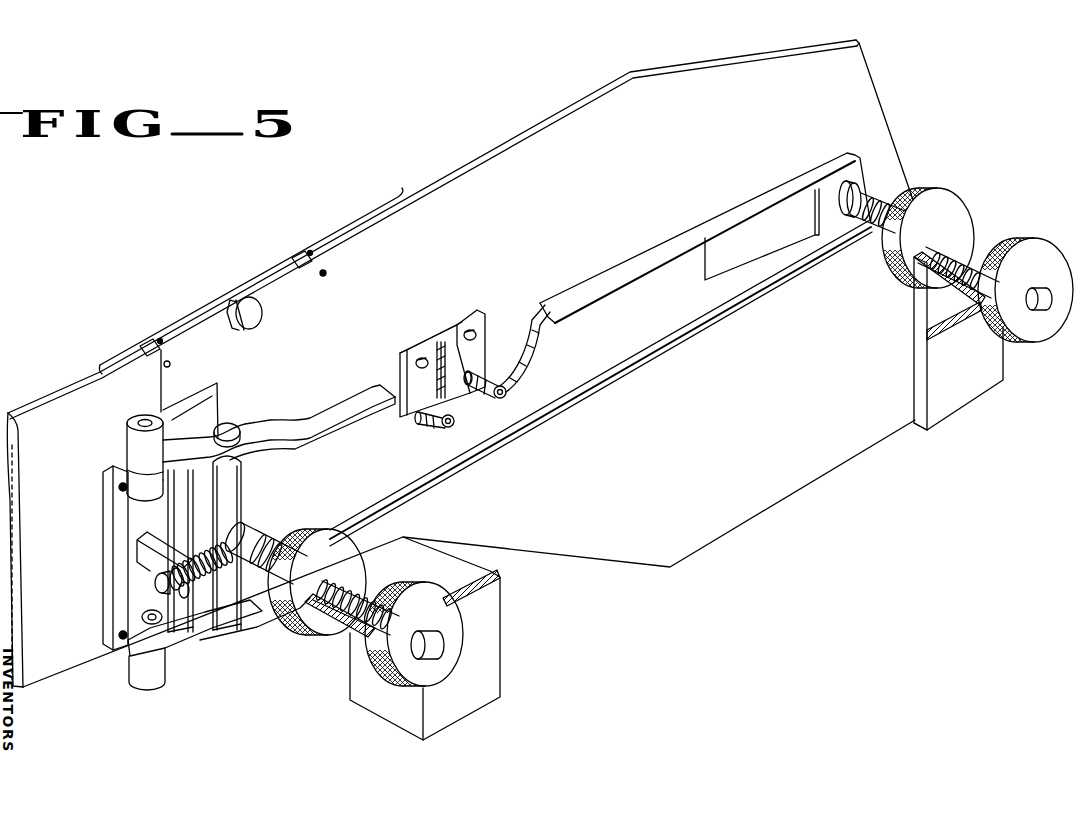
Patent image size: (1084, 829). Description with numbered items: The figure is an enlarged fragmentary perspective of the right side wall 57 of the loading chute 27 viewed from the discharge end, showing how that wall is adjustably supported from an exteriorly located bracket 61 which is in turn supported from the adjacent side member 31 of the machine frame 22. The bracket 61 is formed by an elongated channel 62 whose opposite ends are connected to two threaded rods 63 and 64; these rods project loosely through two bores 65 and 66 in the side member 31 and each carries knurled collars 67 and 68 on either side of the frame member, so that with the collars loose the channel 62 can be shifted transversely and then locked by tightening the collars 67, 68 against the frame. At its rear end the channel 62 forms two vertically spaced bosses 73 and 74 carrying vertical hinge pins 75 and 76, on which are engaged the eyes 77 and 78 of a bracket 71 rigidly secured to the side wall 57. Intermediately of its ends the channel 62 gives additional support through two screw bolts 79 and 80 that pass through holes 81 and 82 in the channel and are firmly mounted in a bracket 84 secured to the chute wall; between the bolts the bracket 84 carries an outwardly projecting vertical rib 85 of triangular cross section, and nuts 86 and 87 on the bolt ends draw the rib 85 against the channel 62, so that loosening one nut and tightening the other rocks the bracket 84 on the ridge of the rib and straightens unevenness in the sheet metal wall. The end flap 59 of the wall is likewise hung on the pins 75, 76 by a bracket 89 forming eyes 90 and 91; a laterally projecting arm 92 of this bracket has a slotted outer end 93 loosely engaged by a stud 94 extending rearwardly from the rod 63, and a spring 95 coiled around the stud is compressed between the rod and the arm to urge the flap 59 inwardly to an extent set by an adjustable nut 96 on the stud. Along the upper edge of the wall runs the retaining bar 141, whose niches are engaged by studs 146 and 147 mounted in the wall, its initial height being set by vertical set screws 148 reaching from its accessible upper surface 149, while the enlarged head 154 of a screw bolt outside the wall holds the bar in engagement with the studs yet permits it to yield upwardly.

The support block 22 is at (951, 418).
The loading chute 27 is at (760, 504).
The side member 31 is at (492, 650).
The side wall 57 is at (458, 186).
The end flap 59 is at (40, 556).
The bracket 61 is at (608, 392).
The channel 62 is at (733, 283).
The threaded rod 63 is at (263, 543).
The threaded rod 64 is at (872, 212).
The bore 65 is at (345, 632).
The bore 66 is at (947, 270).
The knurled collar 67 is at (308, 624).
The knurled collar 68 is at (405, 673).
The bracket 71 is at (213, 413).
The boss 73 is at (132, 460).
The boss 74 is at (138, 657).
The hinge pin 75 is at (145, 420).
The hinge pin 76 is at (150, 612).
The eye 77 is at (136, 441).
The eye 78 is at (140, 681).
The screw bolt 79 is at (420, 416).
The screw bolt 80 is at (474, 392).
The hole 81 is at (436, 370).
The hole 82 is at (493, 370).
The bracket 84 is at (440, 328).
The rib 85 is at (458, 360).
The nut 86 is at (448, 428).
The nut 87 is at (507, 392).
The bracket 89 is at (117, 590).
The eye 90 is at (123, 489).
The eye 91 is at (135, 638).
The arm 92 is at (140, 546).
The slotted outer end 93 is at (182, 584).
The stud 94 is at (155, 583).
The spring 95 is at (204, 548).
The adjustable nut 96 is at (187, 598).
The retaining bar 141 is at (260, 276).
The stud 146 is at (170, 366).
The stud 147 is at (327, 273).
The set screw 148 is at (311, 250).
The upper surface 149 is at (305, 254).
The enlarged head 154 is at (262, 308).